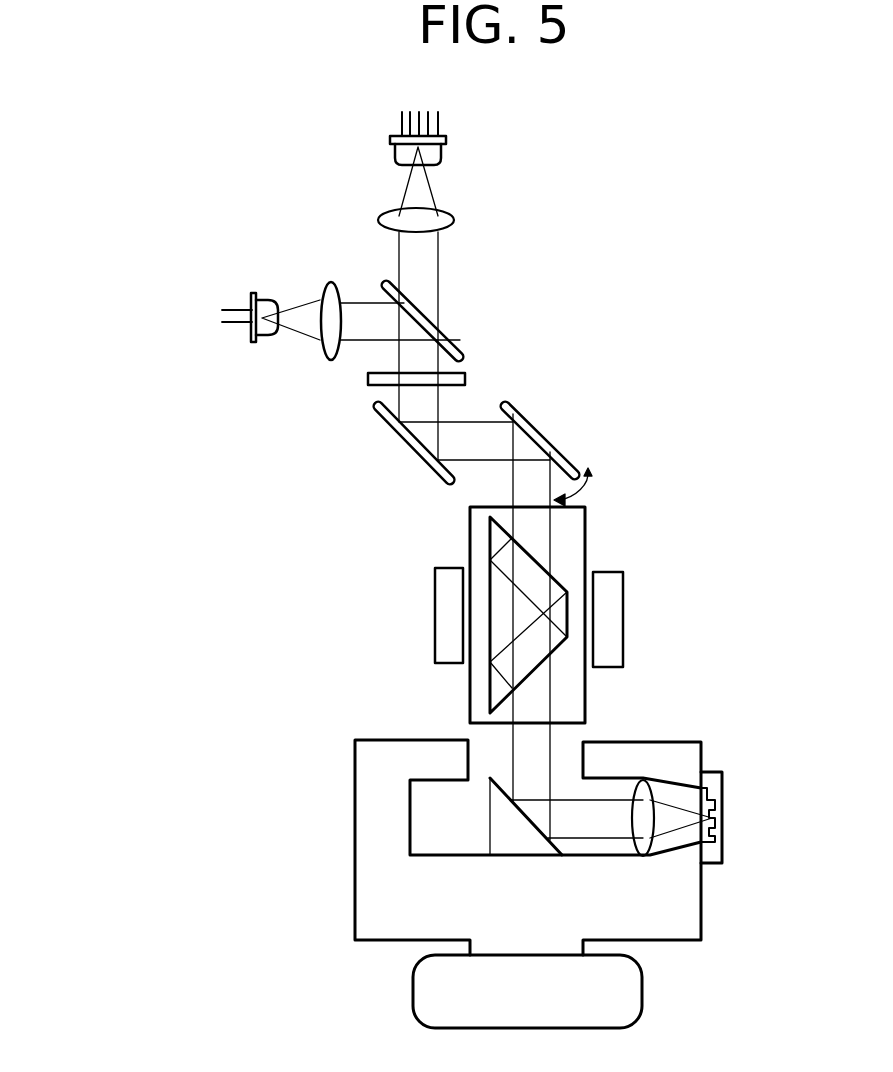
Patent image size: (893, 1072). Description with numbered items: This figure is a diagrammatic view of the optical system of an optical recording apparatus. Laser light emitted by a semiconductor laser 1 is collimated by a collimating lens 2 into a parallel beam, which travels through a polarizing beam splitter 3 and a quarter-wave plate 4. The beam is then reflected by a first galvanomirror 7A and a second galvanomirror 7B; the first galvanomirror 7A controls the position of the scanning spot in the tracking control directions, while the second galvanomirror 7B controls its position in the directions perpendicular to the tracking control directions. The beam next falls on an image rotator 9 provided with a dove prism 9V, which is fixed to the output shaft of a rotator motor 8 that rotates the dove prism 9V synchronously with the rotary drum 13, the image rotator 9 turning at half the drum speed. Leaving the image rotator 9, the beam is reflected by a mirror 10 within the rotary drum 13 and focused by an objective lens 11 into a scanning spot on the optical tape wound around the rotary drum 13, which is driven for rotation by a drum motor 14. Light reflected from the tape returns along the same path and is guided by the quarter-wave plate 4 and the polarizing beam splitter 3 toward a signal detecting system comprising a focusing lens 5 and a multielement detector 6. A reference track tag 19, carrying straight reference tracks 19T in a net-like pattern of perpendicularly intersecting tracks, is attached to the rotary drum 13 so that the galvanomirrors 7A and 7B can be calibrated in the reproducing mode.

The semiconductor laser 1 is at (263, 342).
The collimating lens 2 is at (320, 357).
The polarizing beam splitter 3 is at (455, 340).
The quarter-wave plate 4 is at (466, 379).
The focusing lens 5 is at (453, 222).
The multielement detector 6 is at (442, 157).
The first galvanomirror 7A is at (557, 450).
The second galvanomirror 7B is at (400, 440).
The rotator motor 8 is at (623, 640).
The image rotator 9 is at (600, 566).
The dove prism 9V is at (553, 577).
The mirror 10 is at (495, 822).
The objective lens 11 is at (642, 779).
The rotary drum 13 is at (687, 922).
The drum motor 14 is at (627, 1005).
The reference track tag 19 is at (722, 800).
The reference tracks 19T is at (716, 838).